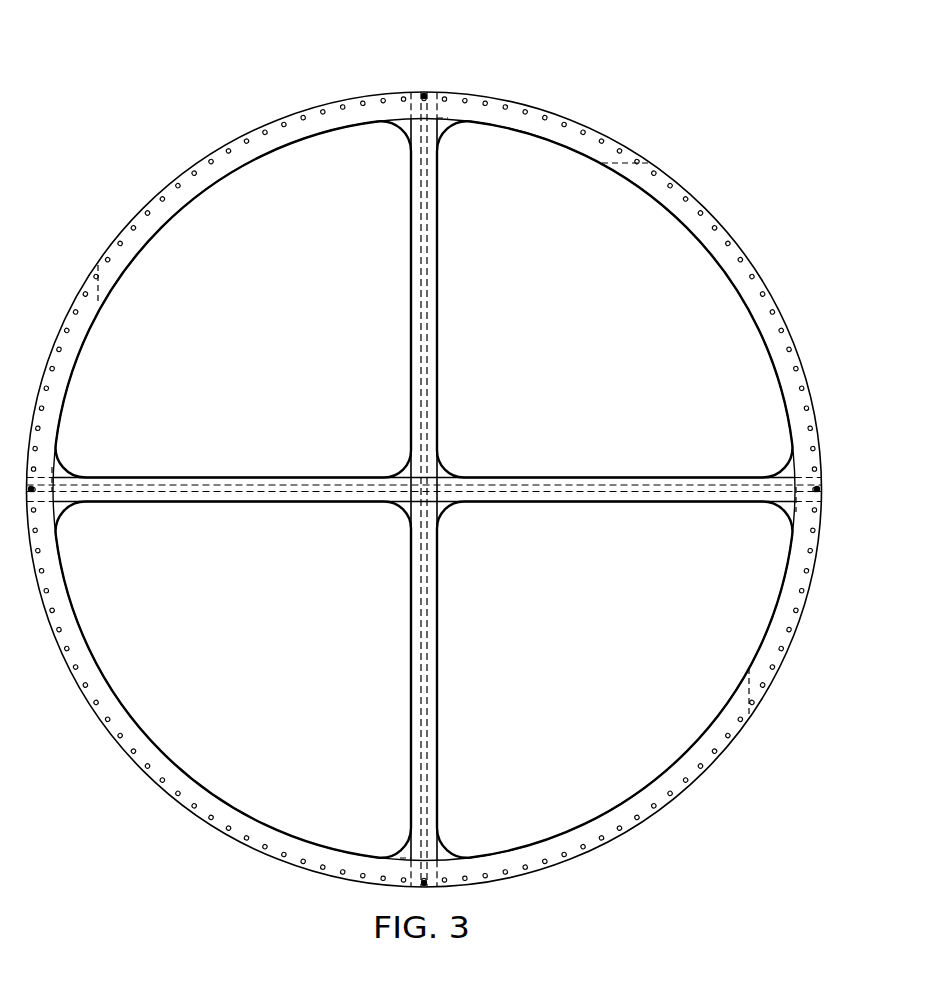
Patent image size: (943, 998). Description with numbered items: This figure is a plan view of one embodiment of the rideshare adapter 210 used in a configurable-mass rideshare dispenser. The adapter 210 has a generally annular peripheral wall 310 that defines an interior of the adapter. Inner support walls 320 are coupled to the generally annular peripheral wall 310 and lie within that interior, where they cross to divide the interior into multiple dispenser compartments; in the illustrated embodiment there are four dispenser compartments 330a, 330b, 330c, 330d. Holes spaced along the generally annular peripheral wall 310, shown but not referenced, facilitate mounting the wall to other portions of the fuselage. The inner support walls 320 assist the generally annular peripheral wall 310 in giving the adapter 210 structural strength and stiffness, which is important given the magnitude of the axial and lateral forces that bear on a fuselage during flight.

The rideshare adapter 210 is at (644, 66).
The generally annular peripheral wall 310 is at (680, 186).
The inner support walls 320 is at (430, 310).
The dispenser compartment 330a is at (283, 324).
The dispenser compartment 330b is at (613, 324).
The dispenser compartment 330c is at (283, 644).
The dispenser compartment 330d is at (620, 644).